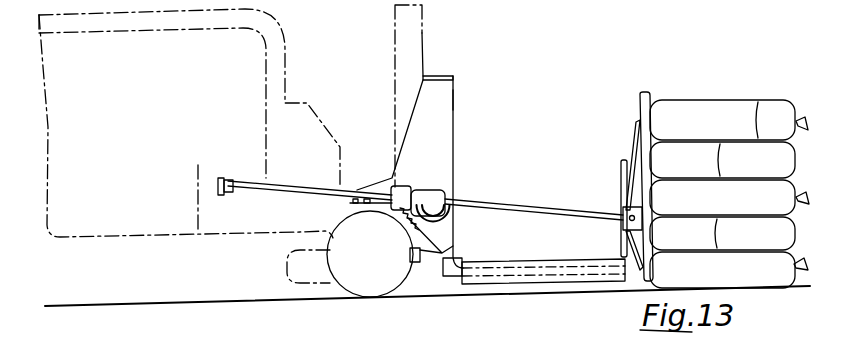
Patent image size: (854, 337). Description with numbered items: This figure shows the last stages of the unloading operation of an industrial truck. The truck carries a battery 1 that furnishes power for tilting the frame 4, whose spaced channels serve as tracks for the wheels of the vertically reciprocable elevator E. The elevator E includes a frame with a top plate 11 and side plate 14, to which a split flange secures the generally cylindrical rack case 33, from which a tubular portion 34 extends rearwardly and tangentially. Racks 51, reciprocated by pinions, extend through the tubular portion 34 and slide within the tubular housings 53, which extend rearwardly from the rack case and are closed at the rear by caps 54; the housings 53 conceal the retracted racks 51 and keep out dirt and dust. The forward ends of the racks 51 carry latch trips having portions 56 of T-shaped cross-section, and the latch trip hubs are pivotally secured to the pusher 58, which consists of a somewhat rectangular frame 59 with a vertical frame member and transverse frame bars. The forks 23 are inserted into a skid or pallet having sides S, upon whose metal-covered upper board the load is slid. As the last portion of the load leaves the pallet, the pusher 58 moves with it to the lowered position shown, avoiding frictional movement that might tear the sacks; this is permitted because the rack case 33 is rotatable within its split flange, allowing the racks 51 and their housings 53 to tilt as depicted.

The battery 1 is at (259, 47).
The frame 4 is at (421, 37).
The top plate 11 is at (440, 75).
The side plate 14 is at (452, 130).
The elevator E is at (455, 93).
The forks 23 is at (458, 268).
The sides S is at (537, 278).
The rack case 33 is at (447, 222).
The tubular portion 34 is at (400, 185).
The racks 51 is at (521, 203).
The tubular housings 53 is at (297, 184).
The caps 54 is at (222, 178).
The portions of T-shaped cross-section 56 is at (622, 164).
The pusher 58 is at (643, 92).
The rectangular frame 59 is at (312, 336).